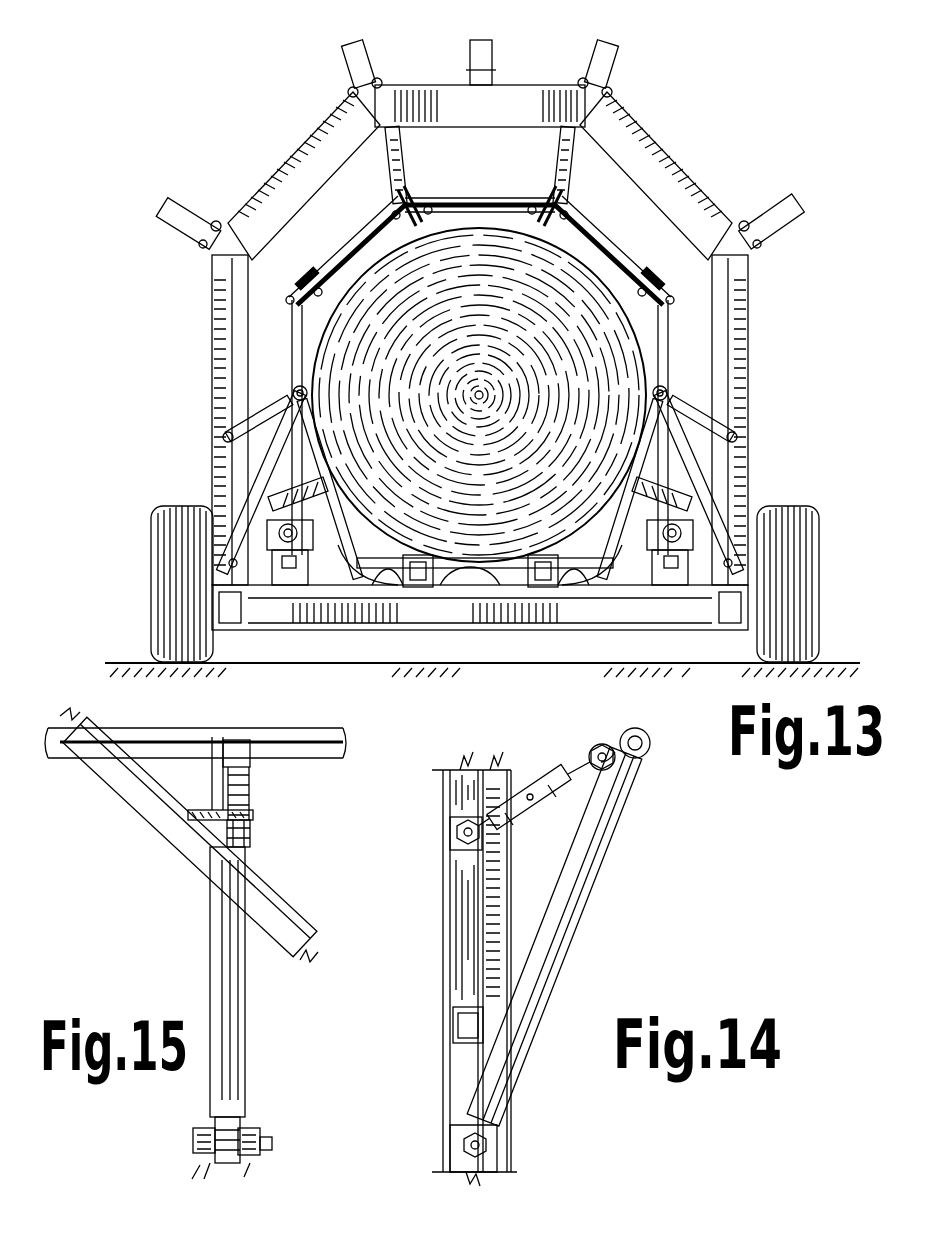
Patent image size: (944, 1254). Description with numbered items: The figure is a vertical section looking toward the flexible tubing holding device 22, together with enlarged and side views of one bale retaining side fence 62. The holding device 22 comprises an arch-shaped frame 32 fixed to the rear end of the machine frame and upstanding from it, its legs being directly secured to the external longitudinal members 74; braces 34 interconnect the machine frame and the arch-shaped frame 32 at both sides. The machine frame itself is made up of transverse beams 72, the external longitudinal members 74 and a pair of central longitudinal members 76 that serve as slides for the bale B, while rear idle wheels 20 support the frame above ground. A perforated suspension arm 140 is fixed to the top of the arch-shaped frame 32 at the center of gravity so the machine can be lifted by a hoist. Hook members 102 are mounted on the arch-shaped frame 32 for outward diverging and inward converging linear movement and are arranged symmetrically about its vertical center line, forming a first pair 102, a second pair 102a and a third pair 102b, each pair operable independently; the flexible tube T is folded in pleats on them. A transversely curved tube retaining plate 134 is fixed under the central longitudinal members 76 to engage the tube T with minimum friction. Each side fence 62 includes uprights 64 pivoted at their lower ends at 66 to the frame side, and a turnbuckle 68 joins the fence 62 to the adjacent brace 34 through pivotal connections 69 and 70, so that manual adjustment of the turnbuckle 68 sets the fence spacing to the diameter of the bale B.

In FIG. 13, the flexible tubing holding device 22 is at (668, 155).
In FIG. 13, the arch-shaped frame 32 is at (632, 152).
In FIG. 13, the perforated suspension arm 140 is at (492, 52).
In FIG. 13, the flexible tube T is at (432, 193).
In FIG. 13, the bale B is at (467, 277).
In FIG. 13, the third pair of hook members 102b is at (385, 212).
In FIG. 13, the second pair of hook members 102a is at (298, 277).
In FIG. 13, the rear idle wheels 20 is at (162, 513).
In FIG. 13, the hook members 102 is at (268, 472).
In FIG. 13, the transverse beams 72 is at (334, 620).
In FIG. 13, the external longitudinal members 74 is at (233, 630).
In FIG. 13, the tube retaining plate 134 is at (374, 607).
In FIG. 13, the central longitudinal members 76 is at (469, 583).
In FIG. 15, the side fences 62 is at (323, 761).
In FIG. 14, the side fences 62 is at (643, 745).
In FIG. 15, the braces 34 is at (160, 807).
In FIG. 14, the braces 34 is at (461, 892).
In FIG. 15, the pivotal connection 69 is at (277, 762).
In FIG. 14, the pivotal connection 69 is at (591, 751).
In FIG. 15, the turnbuckles 68 is at (250, 805).
In FIG. 14, the turnbuckles 68 is at (530, 809).
In FIG. 15, the pivotal connection 70 is at (277, 832).
In FIG. 14, the pivotal connection 70 is at (458, 826).
In FIG. 15, the uprights 64 is at (227, 1098).
In FIG. 14, the uprights 64 is at (595, 852).
In FIG. 15, the pivot 66 is at (272, 1142).
In FIG. 14, the pivot 66 is at (507, 1147).